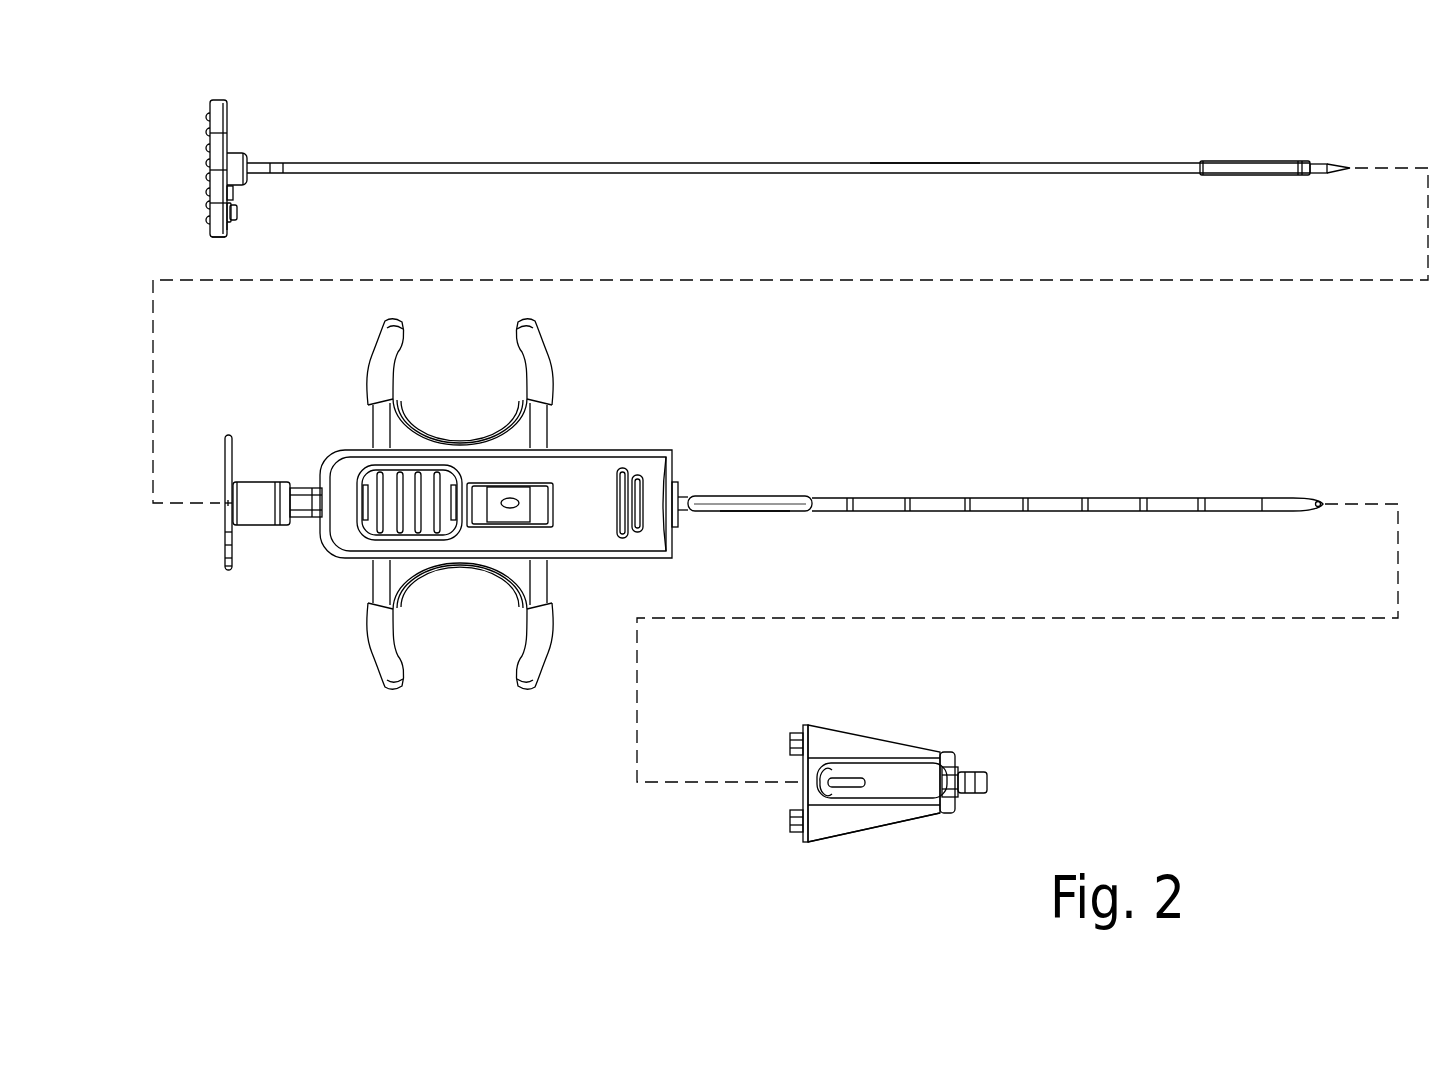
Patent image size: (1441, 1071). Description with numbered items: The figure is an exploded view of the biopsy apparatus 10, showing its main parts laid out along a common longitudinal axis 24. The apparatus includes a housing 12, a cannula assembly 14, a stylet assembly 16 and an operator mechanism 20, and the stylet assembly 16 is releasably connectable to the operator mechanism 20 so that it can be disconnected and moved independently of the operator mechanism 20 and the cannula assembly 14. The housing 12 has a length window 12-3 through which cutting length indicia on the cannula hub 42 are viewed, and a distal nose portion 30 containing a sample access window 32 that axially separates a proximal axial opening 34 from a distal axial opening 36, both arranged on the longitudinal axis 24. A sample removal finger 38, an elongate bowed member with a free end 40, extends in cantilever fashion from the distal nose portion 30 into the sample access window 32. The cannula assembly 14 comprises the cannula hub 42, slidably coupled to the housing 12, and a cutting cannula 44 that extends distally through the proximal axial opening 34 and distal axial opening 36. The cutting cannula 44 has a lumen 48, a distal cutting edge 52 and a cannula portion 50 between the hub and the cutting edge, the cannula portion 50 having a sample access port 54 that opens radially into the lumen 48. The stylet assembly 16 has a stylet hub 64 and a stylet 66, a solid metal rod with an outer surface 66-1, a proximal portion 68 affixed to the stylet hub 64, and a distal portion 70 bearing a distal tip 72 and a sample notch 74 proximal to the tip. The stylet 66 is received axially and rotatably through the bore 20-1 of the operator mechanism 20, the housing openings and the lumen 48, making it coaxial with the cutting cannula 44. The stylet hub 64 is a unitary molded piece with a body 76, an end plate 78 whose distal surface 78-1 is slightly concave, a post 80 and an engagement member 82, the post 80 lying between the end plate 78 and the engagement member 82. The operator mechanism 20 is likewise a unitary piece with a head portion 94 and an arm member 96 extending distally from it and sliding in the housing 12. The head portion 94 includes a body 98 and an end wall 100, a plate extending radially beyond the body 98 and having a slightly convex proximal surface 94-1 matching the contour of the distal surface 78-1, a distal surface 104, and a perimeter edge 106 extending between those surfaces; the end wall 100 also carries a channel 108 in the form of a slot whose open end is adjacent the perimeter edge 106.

The biopsy apparatus 10 is at (256, 782).
The housing 12 is at (803, 793).
The length window 12-3 is at (510, 485).
The cannula assembly 14 is at (1248, 456).
The stylet assembly 16 is at (117, 121).
The operator mechanism 20 is at (193, 473).
The bore 20-1 is at (210, 510).
The longitudinal axis 24 is at (1398, 168).
The distal nose portion 30 is at (897, 747).
The sample access window 32 is at (898, 818).
The proximal axial opening 34 is at (843, 762).
The distal axial opening 36 is at (997, 787).
The sample removal finger 38 is at (835, 792).
The free end 40 is at (891, 810).
The cannula hub 42 is at (515, 515).
The cutting cannula 44 is at (995, 497).
The lumen 48 is at (1340, 515).
The cannula portion 50 is at (812, 492).
The distal cutting edge 52 is at (1320, 498).
The sample access port 54 is at (755, 520).
The stylet hub 64 is at (219, 82).
The stylet 66 is at (575, 163).
The outer surface 66-1 is at (921, 163).
The proximal portion 68 is at (288, 146).
The distal portion 70 is at (1210, 203).
The distal tip 72 is at (1345, 165).
The sample notch 74 is at (1312, 158).
The body 76 is at (232, 152).
The end plate 78 is at (217, 237).
The distal surface 78-1 is at (228, 190).
The post 80 is at (228, 225).
The engagement member 82 is at (238, 213).
The head portion 94 is at (250, 445).
The proximal surface 94-1 is at (226, 536).
The arm member 96 is at (308, 520).
The body 98 is at (258, 482).
The end wall 100 is at (229, 410).
The distal surface 104 is at (232, 547).
The perimeter edge 106 is at (228, 575).
The channel 108 is at (232, 552).